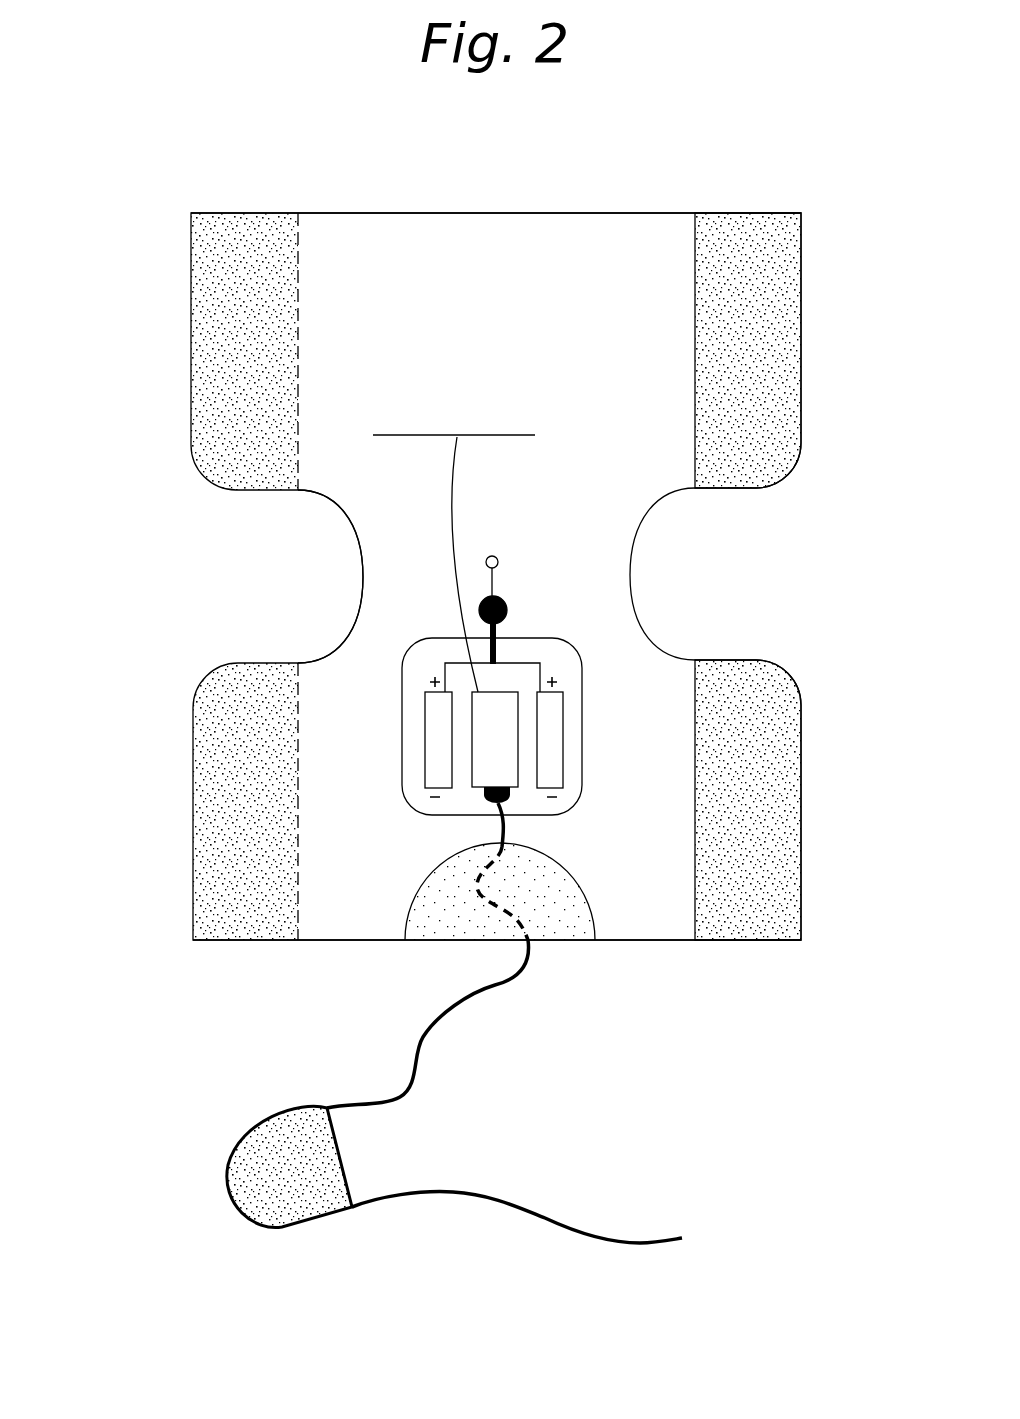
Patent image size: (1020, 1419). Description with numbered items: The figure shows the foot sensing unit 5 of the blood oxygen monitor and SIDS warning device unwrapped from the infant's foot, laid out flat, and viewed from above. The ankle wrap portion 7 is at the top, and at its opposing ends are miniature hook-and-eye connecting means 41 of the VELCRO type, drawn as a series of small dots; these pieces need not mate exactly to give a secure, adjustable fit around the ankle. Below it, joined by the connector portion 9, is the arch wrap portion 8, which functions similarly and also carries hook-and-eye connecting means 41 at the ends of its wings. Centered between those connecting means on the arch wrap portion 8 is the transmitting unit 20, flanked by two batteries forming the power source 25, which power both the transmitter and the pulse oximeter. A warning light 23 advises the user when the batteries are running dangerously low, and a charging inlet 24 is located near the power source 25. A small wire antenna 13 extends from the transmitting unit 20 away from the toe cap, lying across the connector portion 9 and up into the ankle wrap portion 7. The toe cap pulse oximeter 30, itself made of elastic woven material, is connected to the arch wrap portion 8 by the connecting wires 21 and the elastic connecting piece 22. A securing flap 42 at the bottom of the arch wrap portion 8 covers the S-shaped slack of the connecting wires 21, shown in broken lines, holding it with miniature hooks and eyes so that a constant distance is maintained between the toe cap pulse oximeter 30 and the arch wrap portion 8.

The foot sensing unit 5 is at (428, 576).
The ankle wrap portion 7 is at (496, 153).
The arch wrap portion 8 is at (510, 1004).
The connector portion 9 is at (233, 576).
The wire antenna 13 is at (645, 486).
The transmitting unit 20 is at (622, 698).
The connecting wires 21 is at (381, 955).
The elastic connecting piece 22 is at (524, 1187).
The warning light 23 is at (659, 566).
The charging inlet 24 is at (678, 515).
The power source 25 is at (634, 709).
The toe cap pulse oximeter 30 is at (298, 1209).
The hook-and-eye connecting means 41 is at (521, 525).
The securing flap 42 is at (530, 923).